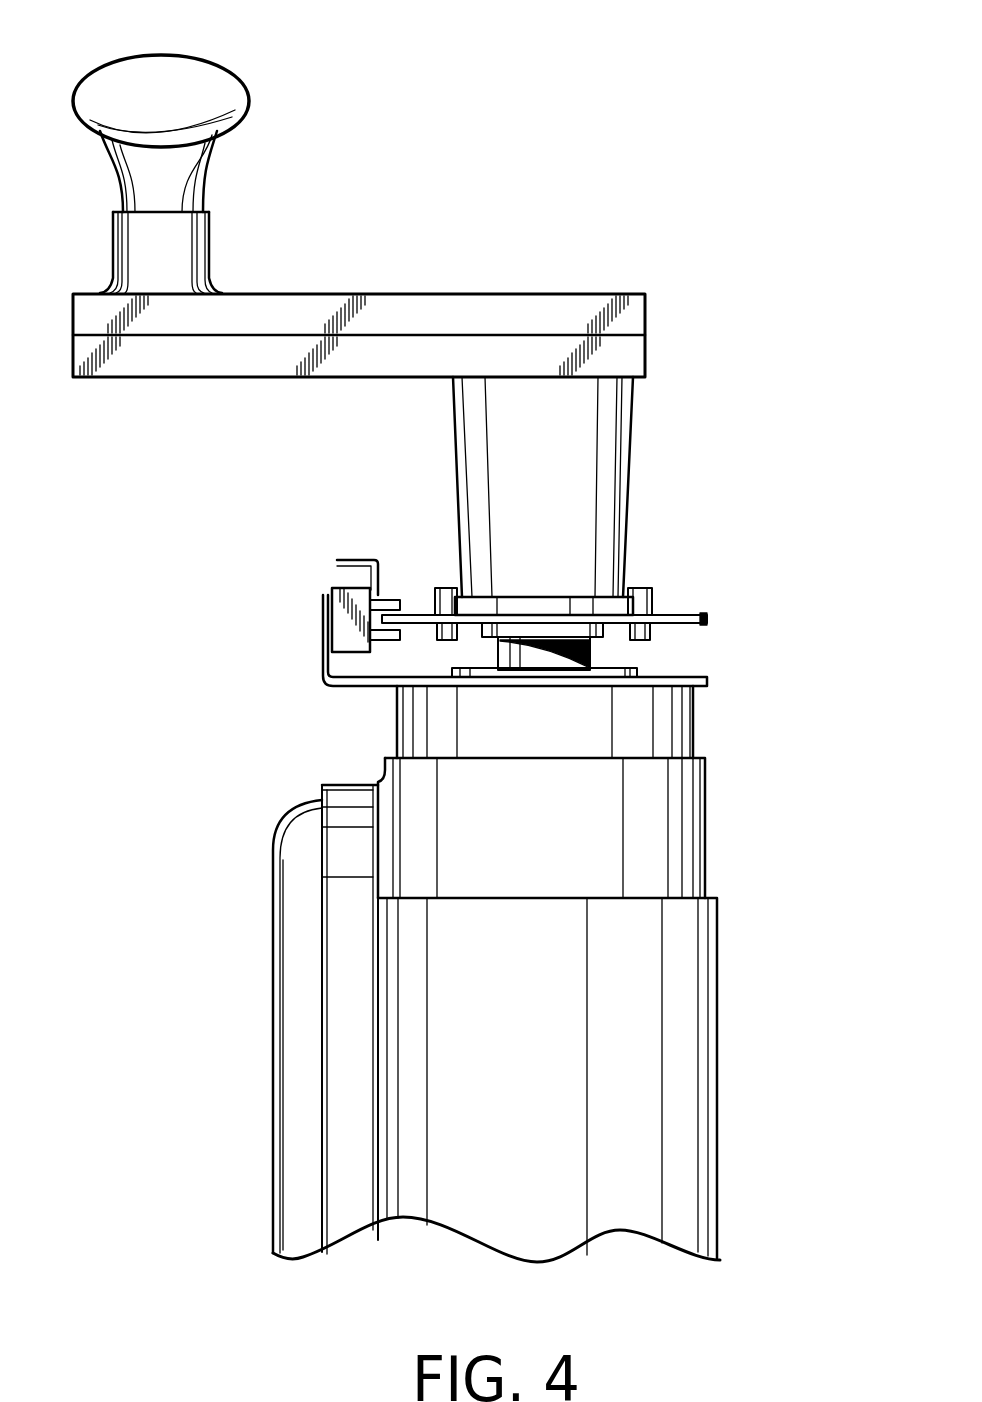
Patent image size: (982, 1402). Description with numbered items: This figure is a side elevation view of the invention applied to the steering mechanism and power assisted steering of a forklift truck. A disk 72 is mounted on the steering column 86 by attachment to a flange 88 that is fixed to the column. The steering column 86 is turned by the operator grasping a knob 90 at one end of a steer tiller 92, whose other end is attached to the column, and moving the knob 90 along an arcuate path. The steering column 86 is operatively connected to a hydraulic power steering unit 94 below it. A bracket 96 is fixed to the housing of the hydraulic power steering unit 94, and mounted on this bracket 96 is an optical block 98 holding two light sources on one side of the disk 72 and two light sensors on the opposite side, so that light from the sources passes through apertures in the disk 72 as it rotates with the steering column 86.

The knob 90 is at (183, 90).
The steer tiller 92 is at (283, 318).
The steering column 86 is at (570, 493).
The flange 88 is at (655, 603).
The disk 72 is at (700, 615).
The bracket 96 is at (333, 677).
The optical block 98 is at (347, 632).
The hydraulic power steering unit 94 is at (678, 1070).